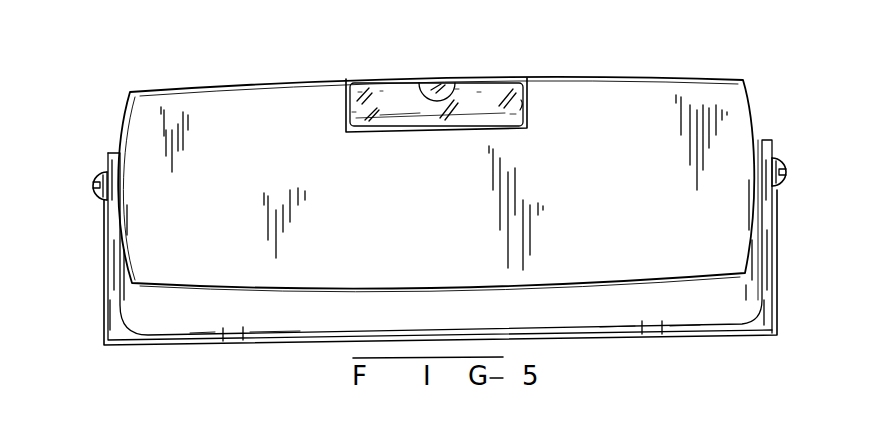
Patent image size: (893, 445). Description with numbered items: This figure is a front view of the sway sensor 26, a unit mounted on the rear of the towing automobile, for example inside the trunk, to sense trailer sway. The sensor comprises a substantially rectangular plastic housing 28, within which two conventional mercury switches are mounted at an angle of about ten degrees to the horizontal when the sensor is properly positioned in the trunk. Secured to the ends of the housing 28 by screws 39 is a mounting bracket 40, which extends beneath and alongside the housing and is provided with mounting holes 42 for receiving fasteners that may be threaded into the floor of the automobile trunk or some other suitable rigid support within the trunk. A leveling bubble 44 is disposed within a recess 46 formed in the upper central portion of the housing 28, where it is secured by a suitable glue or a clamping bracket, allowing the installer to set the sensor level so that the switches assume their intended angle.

The sway sensor 26 is at (212, 80).
The housing 28 is at (615, 78).
The screws 39 is at (91, 194).
The mounting bracket 40 is at (178, 345).
The mounting holes 42 is at (224, 334).
The leveling bubble 44 is at (498, 81).
The recess 46 is at (522, 108).